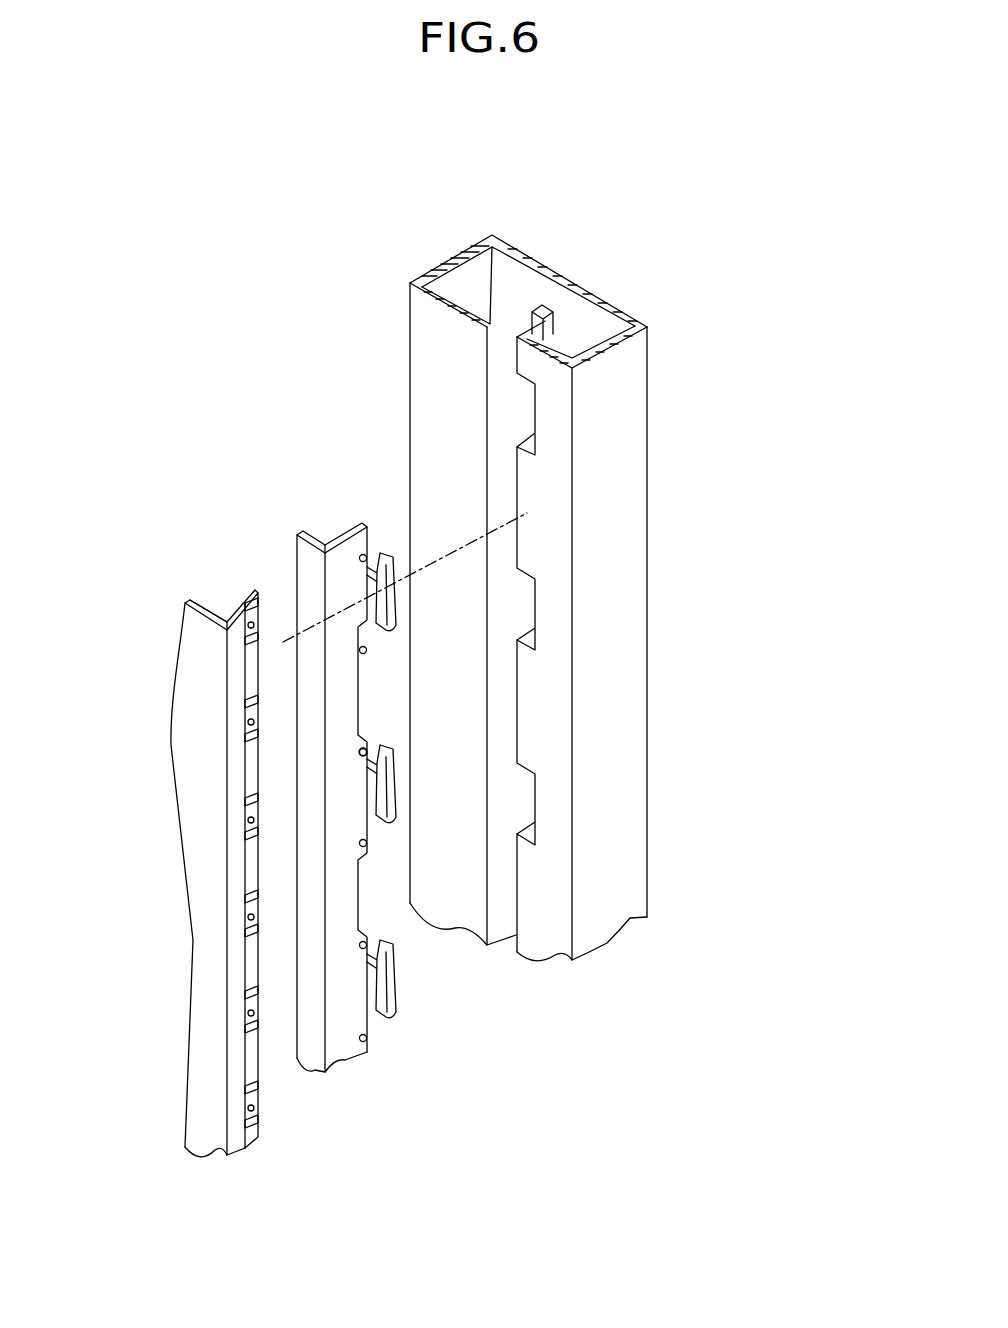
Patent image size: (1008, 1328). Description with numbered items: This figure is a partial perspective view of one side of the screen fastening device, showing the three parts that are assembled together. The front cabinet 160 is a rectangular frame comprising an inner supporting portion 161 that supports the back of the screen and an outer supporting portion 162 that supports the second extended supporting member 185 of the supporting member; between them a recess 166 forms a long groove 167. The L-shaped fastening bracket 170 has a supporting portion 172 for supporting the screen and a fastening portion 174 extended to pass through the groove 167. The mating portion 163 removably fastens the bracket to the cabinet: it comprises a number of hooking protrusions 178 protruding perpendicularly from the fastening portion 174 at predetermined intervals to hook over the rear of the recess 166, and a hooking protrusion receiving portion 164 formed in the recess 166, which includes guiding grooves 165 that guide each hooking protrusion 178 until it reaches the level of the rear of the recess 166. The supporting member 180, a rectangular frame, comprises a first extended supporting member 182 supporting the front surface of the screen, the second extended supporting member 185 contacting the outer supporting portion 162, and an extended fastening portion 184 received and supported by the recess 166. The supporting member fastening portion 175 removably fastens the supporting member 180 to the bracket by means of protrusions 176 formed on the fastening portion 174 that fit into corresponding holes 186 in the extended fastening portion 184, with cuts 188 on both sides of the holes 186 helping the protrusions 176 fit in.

The front cabinet 160 is at (657, 690).
The inner supporting portion 161 is at (423, 402).
The outer supporting portion 162 is at (557, 738).
The mating portion 163 is at (830, 407).
The hooking protrusion receiving portion 164 is at (765, 350).
The guiding grooves 165 is at (525, 590).
The recess 166 is at (543, 316).
The long groove 167 is at (505, 327).
The hooking protrusion 178 is at (388, 612).
The fastening bracket 170 is at (294, 569).
The supporting portion 172 is at (300, 535).
The fastening portion 174 is at (352, 550).
The supporting member fastening portion 175 is at (103, 812).
The protrusions 176 is at (363, 752).
The supporting member 180 is at (170, 732).
The first extended supporting member 182 is at (183, 618).
The extended fastening portion 184 is at (250, 623).
The second extended supporting member 185 is at (234, 630).
The holes 186 is at (260, 815).
The cuts 188 is at (258, 845).